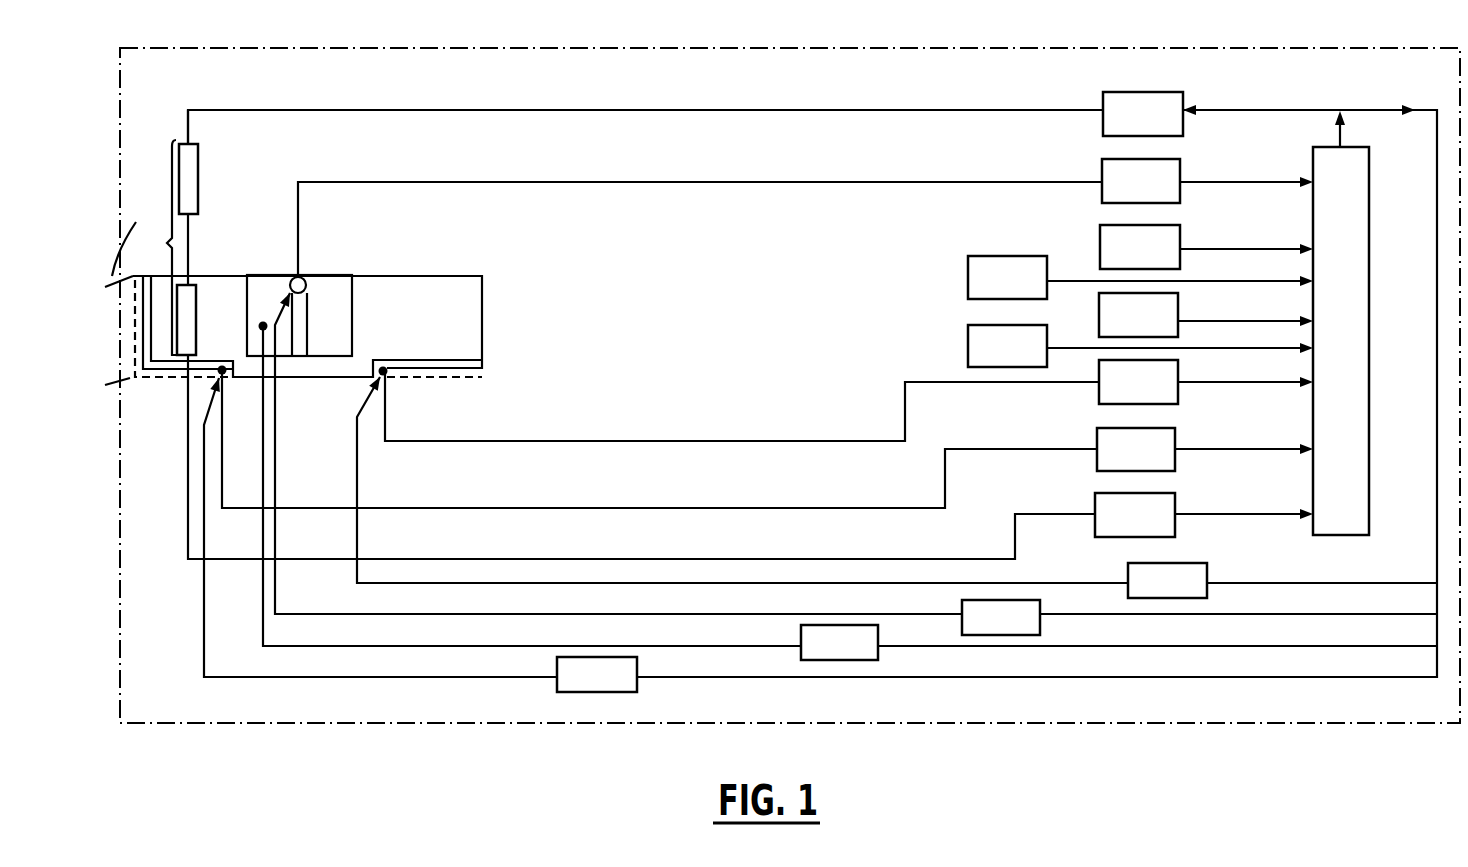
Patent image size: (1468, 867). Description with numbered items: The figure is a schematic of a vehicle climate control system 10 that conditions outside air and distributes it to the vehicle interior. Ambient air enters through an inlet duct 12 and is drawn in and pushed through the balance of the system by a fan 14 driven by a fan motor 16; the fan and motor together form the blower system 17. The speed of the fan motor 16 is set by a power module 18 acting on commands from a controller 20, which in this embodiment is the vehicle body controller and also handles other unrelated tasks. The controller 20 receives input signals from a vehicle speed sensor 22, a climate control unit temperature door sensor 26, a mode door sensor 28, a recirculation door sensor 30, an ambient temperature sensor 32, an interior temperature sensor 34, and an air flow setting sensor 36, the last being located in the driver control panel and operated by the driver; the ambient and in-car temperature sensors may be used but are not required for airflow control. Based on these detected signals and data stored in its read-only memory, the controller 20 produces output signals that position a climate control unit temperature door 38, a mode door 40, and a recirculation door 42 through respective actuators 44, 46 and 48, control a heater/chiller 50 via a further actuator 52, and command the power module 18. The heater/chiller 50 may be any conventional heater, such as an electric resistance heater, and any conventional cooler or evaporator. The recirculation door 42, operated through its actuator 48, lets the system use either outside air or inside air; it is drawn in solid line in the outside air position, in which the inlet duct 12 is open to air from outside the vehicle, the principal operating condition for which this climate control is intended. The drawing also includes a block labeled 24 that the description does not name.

The vehicle climate control system 10 is at (705, 35).
The inlet duct 12 is at (131, 237).
The fan 14 is at (197, 310).
The fan motor 16 is at (200, 170).
The blower system 17 is at (157, 247).
The power module 18 is at (812, 385).
The controller 20 is at (1341, 323).
The vehicle speed sensor 22 is at (1206, 247).
The amplifier 24 is at (750, 457).
The climate control unit temperature door sensor 26 is at (805, 218).
The mode door sensor 28 is at (849, 400).
The recirculation door sensor 30 is at (767, 439).
The ambient temperature sensor 32 is at (1140, 277).
The interior temperature sensor 34 is at (1206, 315).
The air flow setting sensor 36 is at (1140, 346).
The climate control unit temperature door 38 is at (293, 278).
The mode door 40 is at (373, 379).
The recirculation door 42 is at (216, 375).
The actuator 44 is at (856, 464).
The actuator 46 is at (897, 487).
The actuator 48 is at (820, 535).
The heater/chiller 50 is at (333, 290).
The actuator 52 is at (848, 491).